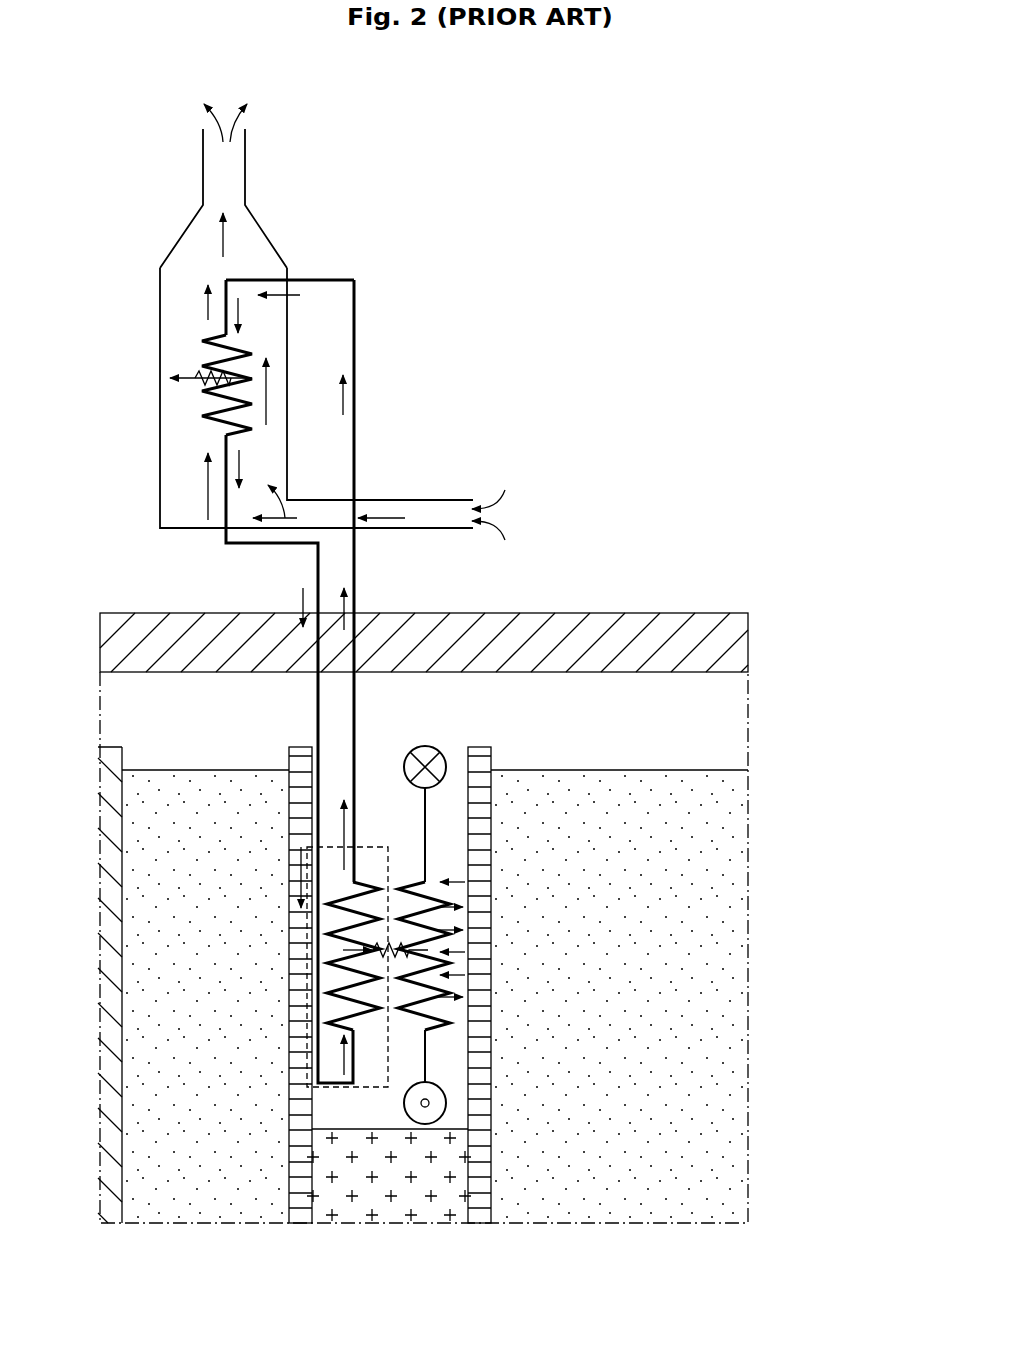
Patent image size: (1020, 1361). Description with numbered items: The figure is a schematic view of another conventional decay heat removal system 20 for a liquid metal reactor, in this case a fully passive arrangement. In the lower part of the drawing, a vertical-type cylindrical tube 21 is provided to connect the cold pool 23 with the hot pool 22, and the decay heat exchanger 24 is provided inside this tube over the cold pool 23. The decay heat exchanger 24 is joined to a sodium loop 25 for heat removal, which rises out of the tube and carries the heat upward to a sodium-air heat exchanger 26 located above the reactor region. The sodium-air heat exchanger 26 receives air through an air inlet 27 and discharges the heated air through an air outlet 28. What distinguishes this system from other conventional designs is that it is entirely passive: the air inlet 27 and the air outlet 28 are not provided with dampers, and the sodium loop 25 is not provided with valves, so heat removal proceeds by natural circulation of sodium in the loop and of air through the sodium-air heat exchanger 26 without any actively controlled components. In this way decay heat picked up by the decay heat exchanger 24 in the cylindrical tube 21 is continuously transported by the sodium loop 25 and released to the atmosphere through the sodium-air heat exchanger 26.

The decay heat removal system 20 is at (718, 142).
The vertical-type cylindrical tube 21 is at (489, 765).
The hot pool 22 is at (702, 972).
The cold pool 23 is at (392, 1194).
The decay heat exchanger 24 is at (367, 843).
The sodium loop 25 is at (315, 578).
The sodium-air heat exchanger 26 is at (156, 372).
The air inlet 27 is at (418, 498).
The air outlet 28 is at (246, 170).